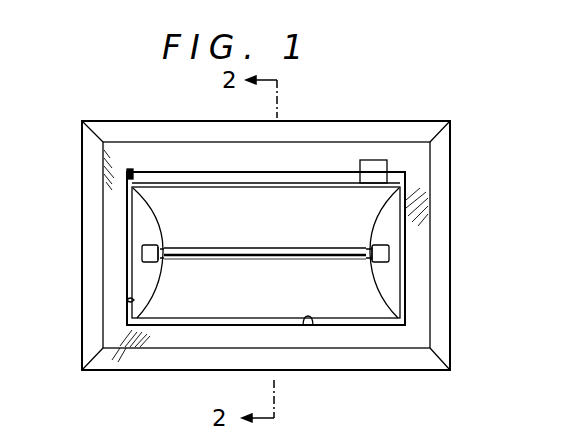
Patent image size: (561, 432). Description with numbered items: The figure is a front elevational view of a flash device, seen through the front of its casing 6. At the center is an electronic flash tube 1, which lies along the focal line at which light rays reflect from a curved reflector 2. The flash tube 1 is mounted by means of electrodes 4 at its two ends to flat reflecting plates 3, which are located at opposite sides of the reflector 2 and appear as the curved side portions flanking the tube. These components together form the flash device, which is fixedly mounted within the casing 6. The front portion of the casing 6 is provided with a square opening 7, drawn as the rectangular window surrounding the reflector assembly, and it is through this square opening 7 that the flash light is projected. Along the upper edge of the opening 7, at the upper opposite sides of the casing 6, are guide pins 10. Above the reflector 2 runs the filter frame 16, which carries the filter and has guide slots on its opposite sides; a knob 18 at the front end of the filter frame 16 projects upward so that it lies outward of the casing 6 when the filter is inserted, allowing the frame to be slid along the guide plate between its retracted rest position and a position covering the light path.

The electronic flash tube 1 is at (242, 257).
The curved reflector 2 is at (292, 205).
The flat reflecting plates 3 is at (137, 225).
The electrodes 4 is at (142, 250).
The casing 6 is at (452, 128).
The square opening 7 is at (128, 298).
The guide pins 10 is at (124, 168).
The filter frame 16 is at (206, 180).
The knob 18 is at (374, 170).